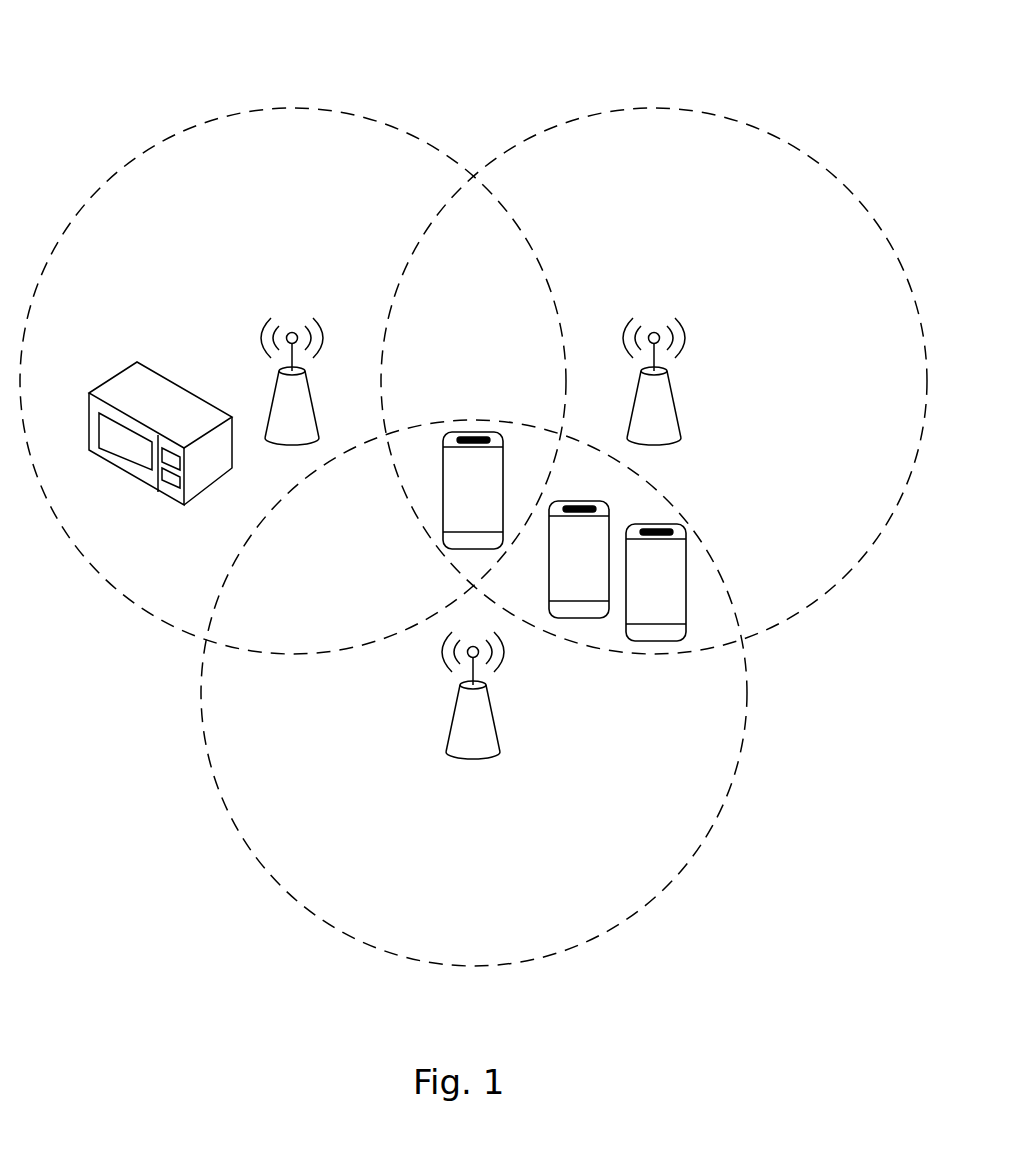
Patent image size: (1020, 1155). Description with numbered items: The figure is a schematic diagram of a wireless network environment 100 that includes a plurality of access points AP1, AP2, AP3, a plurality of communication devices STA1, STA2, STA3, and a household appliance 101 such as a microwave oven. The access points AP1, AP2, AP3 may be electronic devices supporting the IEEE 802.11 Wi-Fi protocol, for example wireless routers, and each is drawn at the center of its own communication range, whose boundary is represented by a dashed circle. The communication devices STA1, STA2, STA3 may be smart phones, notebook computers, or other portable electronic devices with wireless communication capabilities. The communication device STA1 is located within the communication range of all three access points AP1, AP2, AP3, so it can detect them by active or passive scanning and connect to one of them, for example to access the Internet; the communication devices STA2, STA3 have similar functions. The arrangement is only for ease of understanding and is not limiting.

The wireless network environment 100 is at (162, 37).
The household appliance 101 is at (117, 375).
The access point AP1 is at (274, 384).
The access point AP2 is at (673, 392).
The access point AP3 is at (453, 708).
The communication device STA1 is at (473, 431).
The communication device STA2 is at (573, 619).
The communication device STA3 is at (688, 550).